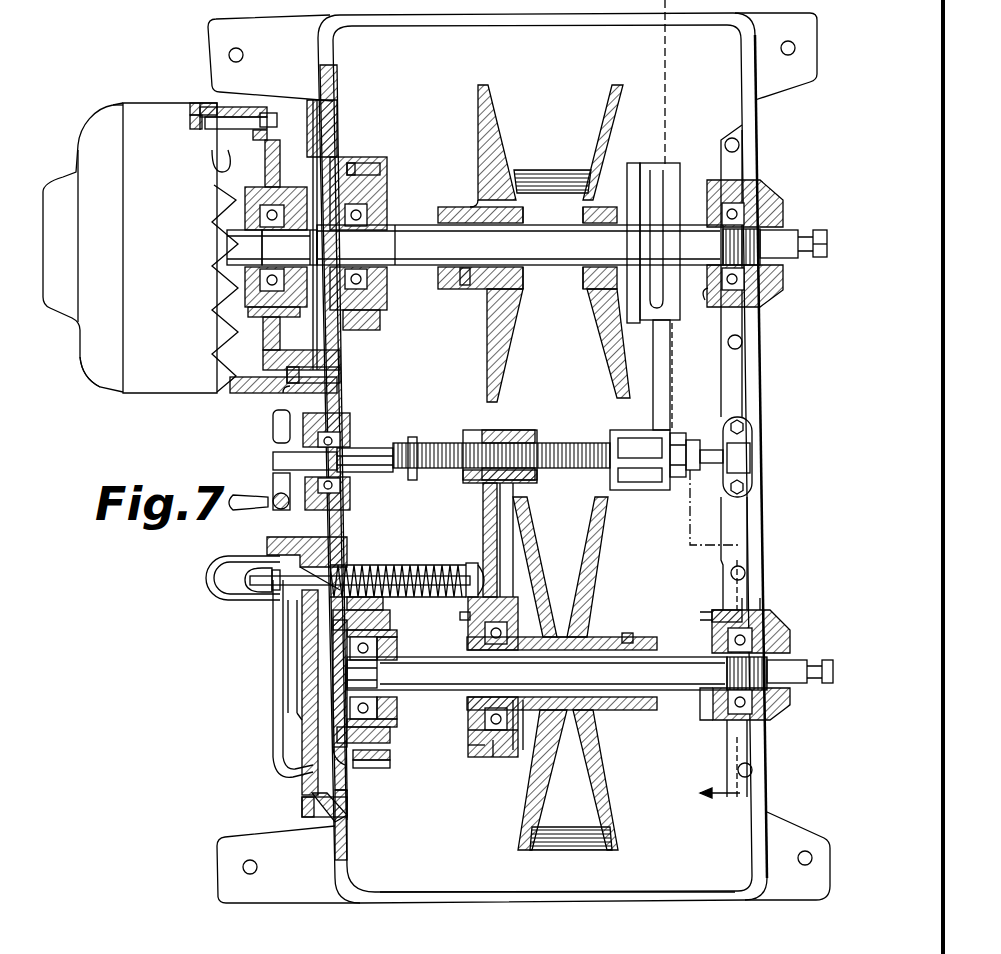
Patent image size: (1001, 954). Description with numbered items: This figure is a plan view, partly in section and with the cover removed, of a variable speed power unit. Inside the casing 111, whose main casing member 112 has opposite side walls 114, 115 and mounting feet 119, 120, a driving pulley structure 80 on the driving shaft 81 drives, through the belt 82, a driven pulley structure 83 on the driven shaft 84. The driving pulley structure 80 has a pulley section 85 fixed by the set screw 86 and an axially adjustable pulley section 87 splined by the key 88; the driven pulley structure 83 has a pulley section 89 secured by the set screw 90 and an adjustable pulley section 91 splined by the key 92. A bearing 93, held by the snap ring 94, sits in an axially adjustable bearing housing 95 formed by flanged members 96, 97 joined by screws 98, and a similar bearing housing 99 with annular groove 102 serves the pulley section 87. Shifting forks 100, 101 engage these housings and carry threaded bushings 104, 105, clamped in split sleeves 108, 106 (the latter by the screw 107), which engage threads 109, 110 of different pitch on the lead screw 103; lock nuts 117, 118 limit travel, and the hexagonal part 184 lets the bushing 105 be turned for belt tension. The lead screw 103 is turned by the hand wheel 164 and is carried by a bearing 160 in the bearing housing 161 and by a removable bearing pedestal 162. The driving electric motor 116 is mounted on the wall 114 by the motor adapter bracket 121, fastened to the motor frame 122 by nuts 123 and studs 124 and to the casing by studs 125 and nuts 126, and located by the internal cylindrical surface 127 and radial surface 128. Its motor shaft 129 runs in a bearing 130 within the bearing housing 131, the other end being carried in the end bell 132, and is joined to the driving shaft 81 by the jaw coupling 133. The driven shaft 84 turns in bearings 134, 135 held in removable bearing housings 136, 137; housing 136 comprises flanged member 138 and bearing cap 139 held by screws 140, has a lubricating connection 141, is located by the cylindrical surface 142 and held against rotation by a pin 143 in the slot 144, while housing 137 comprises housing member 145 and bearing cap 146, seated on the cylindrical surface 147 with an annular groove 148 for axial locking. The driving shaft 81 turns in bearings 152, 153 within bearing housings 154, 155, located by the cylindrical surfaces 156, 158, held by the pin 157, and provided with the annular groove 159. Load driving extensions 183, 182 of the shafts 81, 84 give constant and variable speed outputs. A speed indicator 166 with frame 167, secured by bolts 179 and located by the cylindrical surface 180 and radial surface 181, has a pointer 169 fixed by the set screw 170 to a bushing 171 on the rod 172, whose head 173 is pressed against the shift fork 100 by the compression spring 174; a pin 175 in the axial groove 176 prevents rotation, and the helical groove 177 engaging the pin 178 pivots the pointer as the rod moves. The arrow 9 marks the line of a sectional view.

The section line arrow 9 is at (720, 807).
The driving pulley structure 80 is at (538, 109).
The driving shaft 81 is at (418, 232).
The belt 82 is at (548, 171).
The driven pulley structure 83 is at (558, 783).
The driven shaft 84 is at (690, 690).
The pulley section 85 is at (496, 115).
The set screw 86 is at (462, 284).
The pulley section 87 is at (611, 97).
The key 88 is at (568, 268).
The pulley section 89 is at (595, 785).
The set screw 90 is at (632, 643).
The pulley section 91 is at (552, 800).
The key 92 is at (560, 612).
The bearing 93 is at (493, 748).
The snap ring 94 is at (472, 703).
The bearing housing 95 is at (468, 737).
The flanged member 96 is at (468, 752).
The flanged member 97 is at (530, 757).
The screws 98 is at (467, 615).
The bearing housing 99 is at (678, 172).
The shifting fork 100 is at (484, 522).
The shifting fork 101 is at (664, 378).
The annular groove 102 is at (648, 178).
The lead screw 103 is at (388, 478).
The threaded bushing 104 is at (462, 483).
The threaded bushing 105 is at (668, 480).
The split sleeve 106 is at (620, 437).
The screw 107 is at (625, 482).
The split sleeve 108 is at (485, 430).
The thread 109 is at (440, 450).
The thread 110 is at (560, 448).
The casing 111 is at (382, 59).
The main casing member 112 is at (450, 902).
The side wall 114 is at (347, 855).
The side wall 115 is at (755, 524).
The driving electric motor 116 is at (153, 251).
The lock nut 117 is at (411, 480).
The lock nut 118 is at (700, 478).
The feet 119 is at (218, 60).
The feet 120 is at (787, 80).
The motor adapter bracket 121 is at (248, 393).
The frame 122 is at (145, 100).
The nuts 123 is at (272, 112).
The studs 124 is at (218, 103).
The studs 125 is at (340, 376).
The nuts 126 is at (285, 390).
The internal cylindrical surface 127 is at (315, 142).
The radial surface 128 is at (337, 118).
The motor shaft 129 is at (233, 252).
The bearing 130 is at (245, 208).
The bearing housing 131 is at (245, 285).
The end bell 132 is at (92, 372).
The jaw coupling 133 is at (312, 243).
The bearing 134 is at (376, 698).
The bearing 135 is at (728, 660).
The bearing housing 136 is at (380, 640).
The bearing housing 137 is at (790, 650).
The flanged member 138 is at (384, 736).
The bearing cap 139 is at (335, 672).
The screws 140 is at (332, 759).
The lubricating connection 141 is at (388, 623).
The internal cylindrical surface 142 is at (384, 603).
The pin 143 is at (368, 770).
The slot 144 is at (388, 760).
The housing member 145 is at (779, 718).
The bearing cap 146 is at (718, 718).
The internal cylindrical surface 147 is at (762, 620).
The annular groove 148 is at (737, 615).
The bearing 152 is at (373, 266).
The bearing 153 is at (723, 250).
The bearing housing 154 is at (385, 208).
The bearing housing 155 is at (770, 206).
The cylindrical surface 156 is at (378, 325).
The pin 157 is at (383, 170).
The internal cylindrical surface 158 is at (765, 312).
The annular groove 159 is at (720, 306).
The bearing 160 is at (350, 443).
The bearing housing 161 is at (347, 428).
The bearing pedestal 162 is at (750, 433).
The hand wheel 164 is at (272, 420).
The speed indicator 166 is at (272, 688).
The frame 167 is at (300, 782).
The pointer 169 is at (290, 704).
The set screw 170 is at (268, 621).
The bushing 171 is at (257, 562).
The rod 172 is at (340, 594).
The head 173 is at (468, 568).
The compression spring 174 is at (325, 692).
The pin 175 is at (388, 572).
The axially extending groove 176 is at (432, 580).
The helical groove 177 is at (353, 572).
The pin 178 is at (283, 552).
The bolts 179 is at (302, 808).
The internal cylindrical surface 180 is at (345, 797).
The radial surface 181 is at (347, 818).
The load driving extension 182 is at (824, 684).
The load driving extension 183 is at (815, 258).
The hexagonal part 184 is at (684, 432).